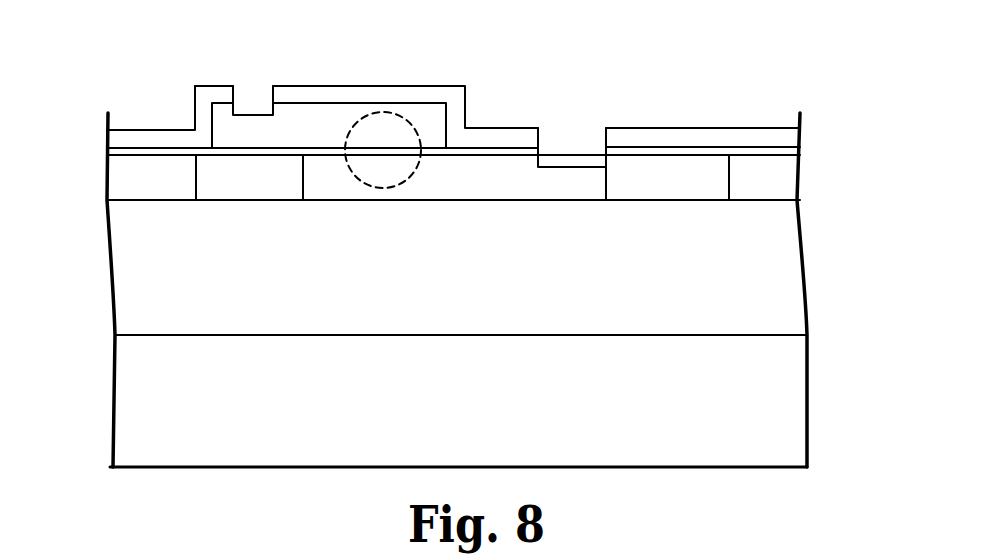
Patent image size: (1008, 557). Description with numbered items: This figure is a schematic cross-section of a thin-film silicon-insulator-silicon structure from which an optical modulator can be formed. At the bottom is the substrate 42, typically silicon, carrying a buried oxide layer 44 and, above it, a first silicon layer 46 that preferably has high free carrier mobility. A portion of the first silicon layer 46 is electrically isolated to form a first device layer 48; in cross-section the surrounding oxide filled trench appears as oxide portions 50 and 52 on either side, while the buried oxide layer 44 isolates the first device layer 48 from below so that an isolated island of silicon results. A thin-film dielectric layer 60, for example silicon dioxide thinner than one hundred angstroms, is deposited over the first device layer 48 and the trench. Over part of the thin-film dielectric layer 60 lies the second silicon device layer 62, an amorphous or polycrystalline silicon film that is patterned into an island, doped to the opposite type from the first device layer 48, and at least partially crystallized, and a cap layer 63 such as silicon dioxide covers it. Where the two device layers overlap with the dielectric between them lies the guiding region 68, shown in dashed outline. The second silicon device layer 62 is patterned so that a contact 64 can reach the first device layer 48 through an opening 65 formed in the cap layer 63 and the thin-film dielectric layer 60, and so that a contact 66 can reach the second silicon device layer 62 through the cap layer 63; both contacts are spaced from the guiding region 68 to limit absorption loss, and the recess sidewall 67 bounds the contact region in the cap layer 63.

The substrate 42 is at (757, 393).
The buried oxide layer 44 is at (775, 253).
The first silicon layer 46 is at (127, 181).
The first device layer 48 is at (497, 183).
The oxide portion 50 is at (248, 182).
The oxide portion 52 is at (660, 180).
The thin-film dielectric layer 60 is at (120, 151).
The second silicon device layer 62 is at (293, 133).
The cap layer 63 is at (147, 143).
The contact 64 is at (565, 160).
The opening 65 is at (550, 127).
The contact 66 is at (252, 110).
The recess sidewall 67 is at (242, 90).
The guiding region 68 is at (393, 112).